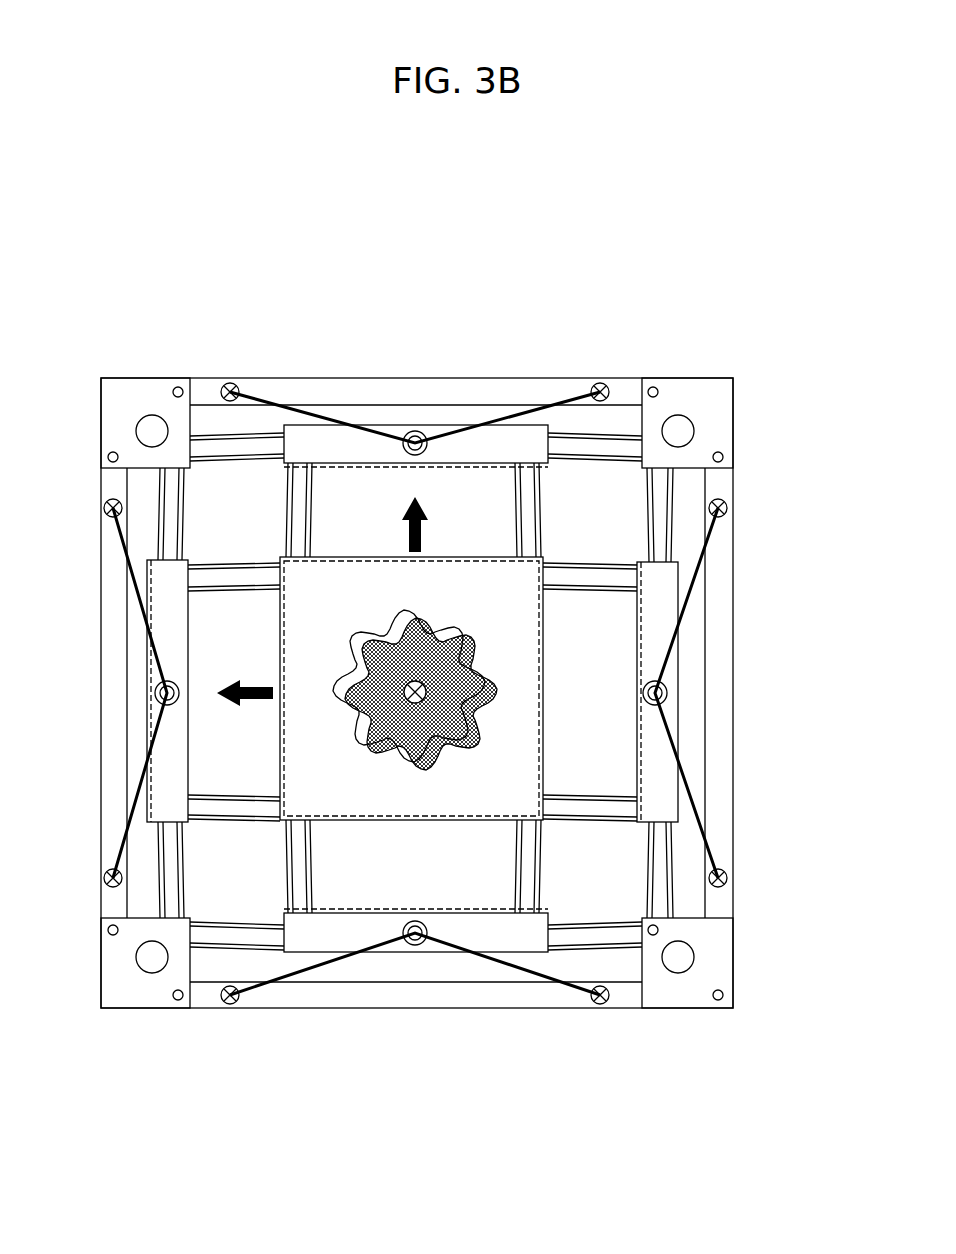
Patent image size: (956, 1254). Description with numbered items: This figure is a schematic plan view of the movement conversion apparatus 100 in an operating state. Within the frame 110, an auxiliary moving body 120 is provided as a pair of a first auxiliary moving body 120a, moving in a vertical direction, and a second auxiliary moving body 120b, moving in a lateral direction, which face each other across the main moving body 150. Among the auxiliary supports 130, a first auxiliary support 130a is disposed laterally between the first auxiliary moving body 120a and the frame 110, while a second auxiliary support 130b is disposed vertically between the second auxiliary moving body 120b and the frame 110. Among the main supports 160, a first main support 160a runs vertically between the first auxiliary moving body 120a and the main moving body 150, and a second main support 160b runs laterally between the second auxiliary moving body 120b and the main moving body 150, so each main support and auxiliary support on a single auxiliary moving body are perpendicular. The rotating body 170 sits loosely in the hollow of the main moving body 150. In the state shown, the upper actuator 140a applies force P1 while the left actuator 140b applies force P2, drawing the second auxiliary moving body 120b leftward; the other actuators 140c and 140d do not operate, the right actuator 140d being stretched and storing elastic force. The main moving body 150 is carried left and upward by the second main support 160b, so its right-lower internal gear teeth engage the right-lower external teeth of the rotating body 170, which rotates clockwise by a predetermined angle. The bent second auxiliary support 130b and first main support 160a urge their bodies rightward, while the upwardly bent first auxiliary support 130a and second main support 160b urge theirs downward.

The movement conversion apparatus 100 is at (111, 213).
The frame 110 is at (290, 378).
The auxiliary moving body 120 is at (178, 315).
The first auxiliary moving body 120a is at (284, 425).
The second auxiliary moving body 120b is at (147, 578).
The auxiliary support 130 is at (730, 293).
The first auxiliary support 130a is at (603, 458).
The second auxiliary support 130b is at (668, 490).
The upper actuator 140a is at (493, 421).
The left actuator 140b is at (135, 797).
The actuator 140c is at (527, 972).
The right actuator 140d is at (688, 603).
The main moving body 150 is at (533, 753).
The main support 160 is at (817, 505).
The first main support 160a is at (545, 505).
The second main support 160b is at (617, 588).
The rotating body 170 is at (490, 700).